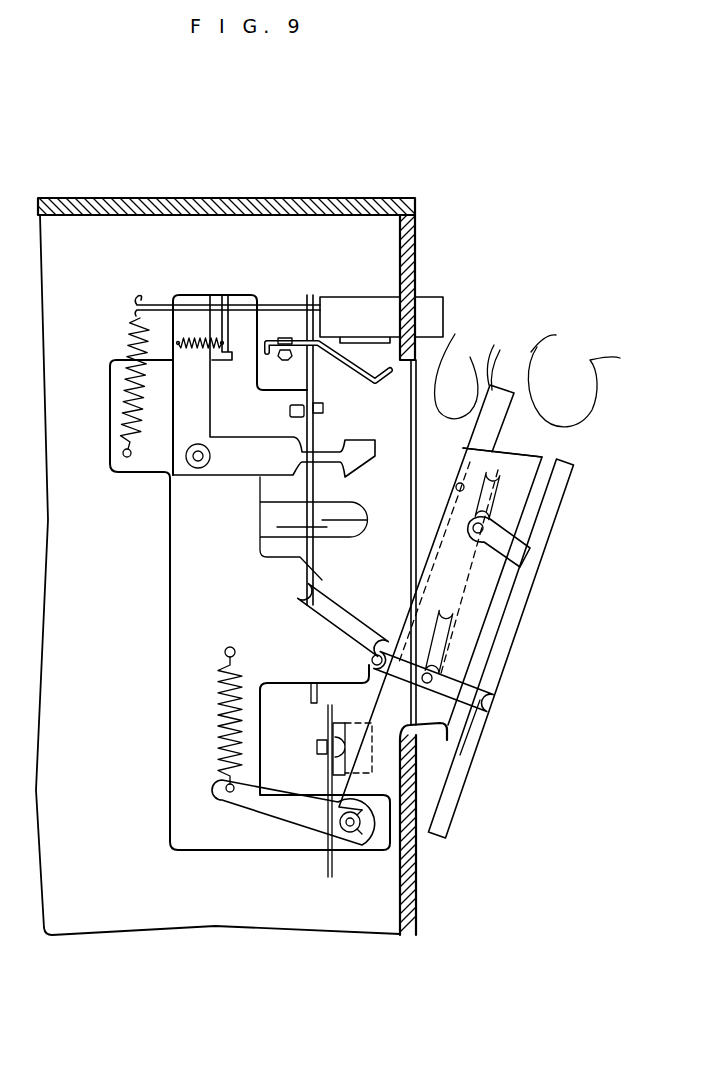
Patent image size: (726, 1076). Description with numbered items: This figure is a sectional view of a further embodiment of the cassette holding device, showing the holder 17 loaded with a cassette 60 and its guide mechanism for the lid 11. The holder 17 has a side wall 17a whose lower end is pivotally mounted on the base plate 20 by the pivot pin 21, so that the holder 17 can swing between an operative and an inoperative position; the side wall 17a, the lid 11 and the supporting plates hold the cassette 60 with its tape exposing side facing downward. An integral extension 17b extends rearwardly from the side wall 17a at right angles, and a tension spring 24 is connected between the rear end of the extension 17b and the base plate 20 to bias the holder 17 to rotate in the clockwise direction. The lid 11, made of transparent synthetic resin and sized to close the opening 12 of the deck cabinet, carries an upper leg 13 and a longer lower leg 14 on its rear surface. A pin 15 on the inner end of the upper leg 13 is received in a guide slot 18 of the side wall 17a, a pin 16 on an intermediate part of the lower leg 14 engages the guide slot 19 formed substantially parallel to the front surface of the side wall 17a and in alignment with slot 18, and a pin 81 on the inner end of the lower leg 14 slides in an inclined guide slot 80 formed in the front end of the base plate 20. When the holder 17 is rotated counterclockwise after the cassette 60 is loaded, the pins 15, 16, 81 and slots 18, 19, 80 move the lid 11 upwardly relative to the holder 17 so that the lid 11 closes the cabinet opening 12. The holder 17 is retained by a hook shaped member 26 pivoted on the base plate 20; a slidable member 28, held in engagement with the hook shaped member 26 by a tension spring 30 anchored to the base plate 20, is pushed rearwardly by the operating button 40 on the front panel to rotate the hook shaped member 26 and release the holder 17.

The lid 11 is at (560, 488).
The opening 12 is at (410, 560).
The upper leg 13 is at (530, 540).
The lower leg 14 is at (483, 716).
The pin 15 is at (478, 535).
The pin 16 is at (425, 684).
The holder 17 is at (427, 632).
The side wall 17a is at (463, 465).
The extension 17b is at (250, 816).
The guide slot 18 is at (488, 494).
The guide slot 19 is at (450, 608).
The base plate 20 is at (170, 556).
The pivot pin 21 is at (355, 835).
The tension spring 24 is at (215, 712).
The hook shaped member 26 is at (226, 477).
The slidable member 28 is at (292, 303).
The tension spring 30 is at (134, 338).
The operating button 40 is at (433, 303).
The cassette 60 is at (505, 393).
The inclined guide slot 80 is at (333, 630).
The pin 81 is at (370, 662).